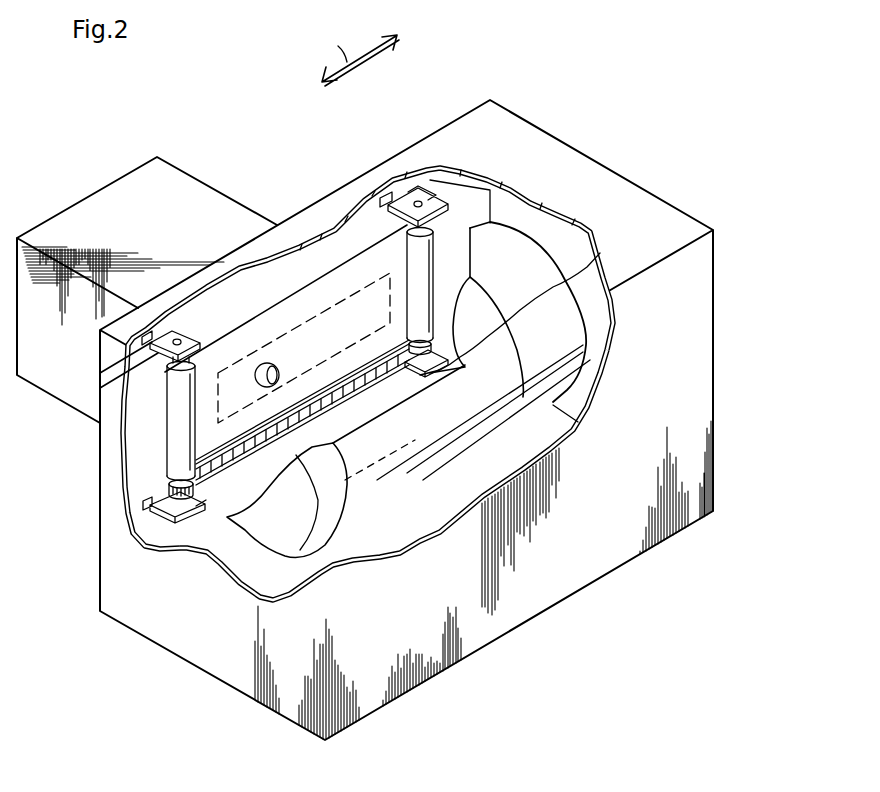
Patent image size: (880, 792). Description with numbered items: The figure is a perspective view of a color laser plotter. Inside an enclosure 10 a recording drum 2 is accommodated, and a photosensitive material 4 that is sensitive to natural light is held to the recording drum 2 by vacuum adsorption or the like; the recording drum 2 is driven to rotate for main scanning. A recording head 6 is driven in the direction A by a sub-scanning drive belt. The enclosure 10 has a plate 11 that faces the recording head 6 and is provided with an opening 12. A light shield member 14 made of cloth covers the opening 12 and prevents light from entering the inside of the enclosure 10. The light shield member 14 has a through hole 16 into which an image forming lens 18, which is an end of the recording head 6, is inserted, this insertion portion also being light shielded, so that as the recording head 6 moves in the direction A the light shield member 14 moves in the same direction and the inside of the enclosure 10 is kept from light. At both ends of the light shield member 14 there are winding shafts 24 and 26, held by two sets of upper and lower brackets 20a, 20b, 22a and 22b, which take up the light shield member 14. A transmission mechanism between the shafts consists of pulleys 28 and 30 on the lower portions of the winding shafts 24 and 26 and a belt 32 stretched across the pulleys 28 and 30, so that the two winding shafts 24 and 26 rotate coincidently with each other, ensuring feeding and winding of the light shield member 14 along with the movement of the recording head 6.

The recording drum 2 is at (507, 243).
The photosensitive material 4 is at (483, 313).
The recording head 6 is at (165, 178).
The enclosure 10 is at (498, 127).
The plate 11 is at (370, 207).
The opening 12 is at (350, 305).
The light shield member 14 is at (303, 292).
The through hole 16 is at (167, 408).
The image forming lens 18 is at (197, 464).
The upper bracket 20a is at (158, 362).
The lower bracket 20b is at (180, 517).
The upper bracket 22a is at (440, 167).
The lower bracket 22b is at (600, 253).
The winding shaft 24 is at (170, 486).
The winding shaft 26 is at (440, 200).
The pulley 28 is at (200, 510).
The pulley 30 is at (587, 267).
The belt 32 is at (227, 483).
The direction A is at (358, 55).